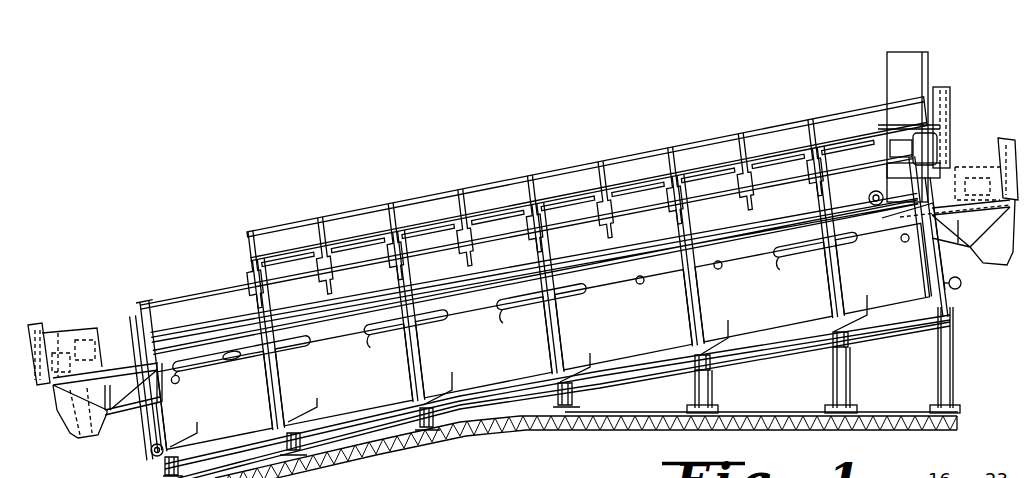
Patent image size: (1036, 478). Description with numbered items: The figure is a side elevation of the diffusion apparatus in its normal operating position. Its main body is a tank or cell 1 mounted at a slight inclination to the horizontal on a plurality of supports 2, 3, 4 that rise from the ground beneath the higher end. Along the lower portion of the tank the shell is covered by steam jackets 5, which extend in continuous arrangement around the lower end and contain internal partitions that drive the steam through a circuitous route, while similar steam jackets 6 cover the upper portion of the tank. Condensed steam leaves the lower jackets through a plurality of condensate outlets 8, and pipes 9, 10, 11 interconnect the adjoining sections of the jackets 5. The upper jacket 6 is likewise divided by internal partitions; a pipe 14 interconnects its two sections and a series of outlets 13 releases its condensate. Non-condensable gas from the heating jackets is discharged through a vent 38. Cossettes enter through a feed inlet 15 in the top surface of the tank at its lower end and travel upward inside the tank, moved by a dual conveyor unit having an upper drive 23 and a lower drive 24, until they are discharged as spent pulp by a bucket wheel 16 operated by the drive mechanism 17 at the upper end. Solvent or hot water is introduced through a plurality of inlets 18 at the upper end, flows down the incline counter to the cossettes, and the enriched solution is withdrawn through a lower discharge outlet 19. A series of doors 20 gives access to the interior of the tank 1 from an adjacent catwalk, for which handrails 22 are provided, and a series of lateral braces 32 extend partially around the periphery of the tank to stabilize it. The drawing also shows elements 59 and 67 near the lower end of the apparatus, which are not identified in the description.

The tank or cell 1 is at (215, 282).
The support 2 is at (705, 388).
The support 3 is at (848, 386).
The support 4 is at (950, 373).
The steam jackets 5 is at (229, 411).
The steam jackets 6 is at (759, 299).
The condensate outlets 8 is at (190, 448).
The pipe 9 is at (250, 356).
The pipe 10 is at (137, 252).
The pipe 11 is at (528, 302).
The outlets 13 is at (700, 335).
The pipe 14 is at (800, 252).
The feed inlet 15 is at (158, 298).
The bucket wheel 16 is at (925, 75).
The drive mechanism 17 is at (950, 128).
The inlets 18 is at (868, 195).
The lower discharge outlet 19 is at (146, 458).
The doors 20 is at (308, 256).
The handrails 22 is at (415, 196).
The upper drive 23 is at (1000, 266).
The lower drive 24 is at (72, 321).
The lateral braces 32 is at (272, 298).
The vent 38 is at (962, 288).
The channel 59 is at (170, 410).
The bracket 67 is at (142, 428).